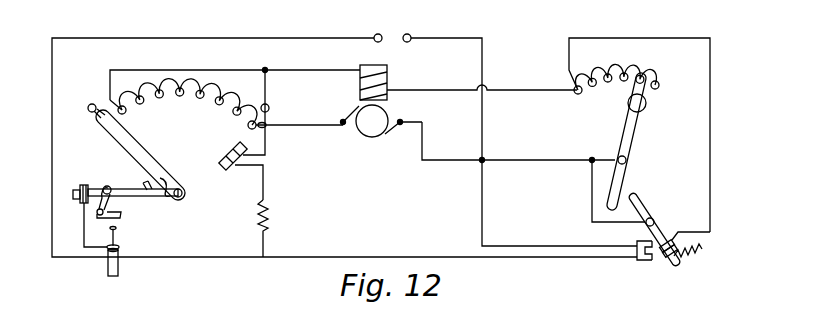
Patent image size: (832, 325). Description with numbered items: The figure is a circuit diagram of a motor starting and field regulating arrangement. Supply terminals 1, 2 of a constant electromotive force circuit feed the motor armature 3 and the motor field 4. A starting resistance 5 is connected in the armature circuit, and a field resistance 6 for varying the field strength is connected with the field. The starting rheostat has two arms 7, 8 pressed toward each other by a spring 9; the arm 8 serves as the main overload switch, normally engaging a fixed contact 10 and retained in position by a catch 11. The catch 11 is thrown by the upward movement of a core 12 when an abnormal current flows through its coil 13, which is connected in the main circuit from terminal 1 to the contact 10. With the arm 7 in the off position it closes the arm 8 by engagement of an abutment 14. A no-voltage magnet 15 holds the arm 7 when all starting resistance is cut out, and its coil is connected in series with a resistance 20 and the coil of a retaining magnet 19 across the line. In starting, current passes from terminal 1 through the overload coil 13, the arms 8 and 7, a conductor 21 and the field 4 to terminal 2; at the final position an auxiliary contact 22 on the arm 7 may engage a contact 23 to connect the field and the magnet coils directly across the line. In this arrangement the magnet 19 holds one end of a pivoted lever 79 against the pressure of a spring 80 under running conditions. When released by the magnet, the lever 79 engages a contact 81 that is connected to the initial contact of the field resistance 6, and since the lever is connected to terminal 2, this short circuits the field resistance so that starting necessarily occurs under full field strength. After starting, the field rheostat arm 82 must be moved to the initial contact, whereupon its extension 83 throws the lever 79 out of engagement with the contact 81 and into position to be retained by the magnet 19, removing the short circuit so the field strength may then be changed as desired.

The supply terminal 1 is at (384, 25).
The supply terminal 2 is at (407, 24).
The motor armature 3 is at (382, 121).
The motor field 4 is at (408, 85).
The starting resistance 5 is at (226, 104).
The field resistance 6 is at (639, 135).
The arm 7 is at (147, 158).
The arm 8 is at (128, 198).
The spring 9 is at (166, 200).
The fixed contact 10 is at (83, 187).
The catch 11 is at (95, 208).
The core 12 is at (118, 270).
The coil 13 is at (118, 249).
The abutment 14 is at (142, 183).
The no-voltage magnet 15 is at (234, 168).
The retaining magnet 19 is at (639, 262).
The resistance 20 is at (276, 228).
The conductor 21 is at (200, 70).
The auxiliary contact 22 is at (89, 106).
The contact 23 is at (269, 106).
The pivoted lever 79 is at (664, 232).
The spring 80 is at (692, 254).
The contact 81 is at (676, 243).
The arm 82 is at (628, 134).
The extension 83 is at (620, 178).